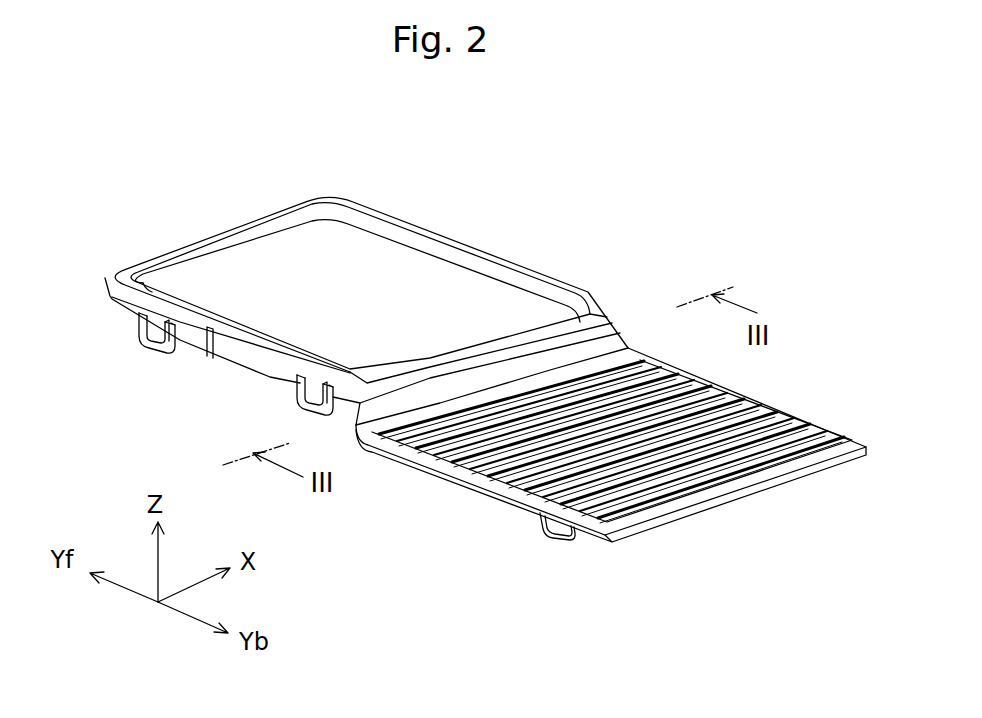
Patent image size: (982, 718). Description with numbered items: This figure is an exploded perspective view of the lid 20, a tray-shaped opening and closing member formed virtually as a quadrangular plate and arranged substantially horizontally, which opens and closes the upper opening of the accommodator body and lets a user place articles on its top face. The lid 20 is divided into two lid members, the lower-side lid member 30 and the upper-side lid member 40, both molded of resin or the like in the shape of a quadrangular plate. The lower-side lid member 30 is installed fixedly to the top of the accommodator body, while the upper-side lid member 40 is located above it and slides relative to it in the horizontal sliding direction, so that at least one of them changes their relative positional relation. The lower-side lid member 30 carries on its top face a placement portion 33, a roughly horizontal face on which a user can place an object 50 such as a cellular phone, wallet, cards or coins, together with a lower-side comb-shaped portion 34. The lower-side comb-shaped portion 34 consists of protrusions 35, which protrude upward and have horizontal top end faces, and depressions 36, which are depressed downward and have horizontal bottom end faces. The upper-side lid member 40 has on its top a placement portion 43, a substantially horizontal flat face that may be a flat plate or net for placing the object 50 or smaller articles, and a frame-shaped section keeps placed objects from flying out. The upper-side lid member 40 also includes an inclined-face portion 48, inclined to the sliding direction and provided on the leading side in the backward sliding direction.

The lid 20 is at (640, 258).
The lower-side lid member 30 is at (717, 407).
The placement portion 33 is at (507, 440).
The lower-side comb-shaped portion 34 is at (615, 486).
The protrusions 35 is at (740, 497).
The depressions 36 is at (697, 520).
The upper-side lid member 40 is at (390, 262).
The placement portion 43 is at (297, 243).
The inclined-face portion 48 is at (437, 393).
The object 50 is at (610, 545).